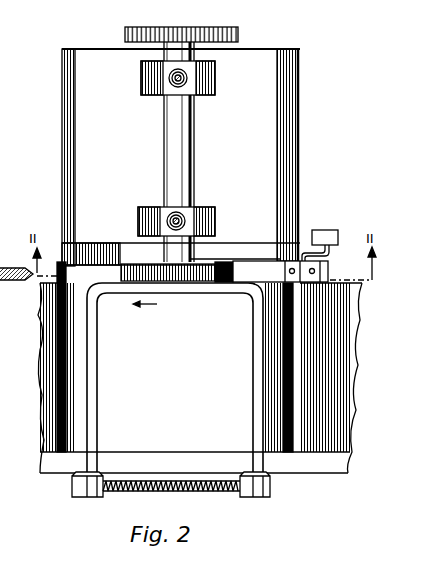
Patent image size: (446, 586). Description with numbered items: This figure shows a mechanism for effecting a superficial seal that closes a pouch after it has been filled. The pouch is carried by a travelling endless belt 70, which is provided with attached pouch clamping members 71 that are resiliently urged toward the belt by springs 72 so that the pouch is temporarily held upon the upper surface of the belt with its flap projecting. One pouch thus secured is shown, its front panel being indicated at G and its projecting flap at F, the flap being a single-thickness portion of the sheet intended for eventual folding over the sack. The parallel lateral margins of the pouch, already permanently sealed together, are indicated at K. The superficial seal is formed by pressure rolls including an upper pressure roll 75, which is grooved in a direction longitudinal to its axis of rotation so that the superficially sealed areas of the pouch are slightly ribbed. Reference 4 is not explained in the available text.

The screw clamp assembly 4 is at (106, 250).
The upper pressure roll 75 is at (220, 262).
The travelling endless belt 70 is at (343, 369).
The pouch clamping members 71 is at (253, 379).
The springs 72 is at (197, 489).
The permanently sealed lateral margins K is at (58, 358).
The flap panel F is at (239, 172).
The front panel G is at (183, 373).